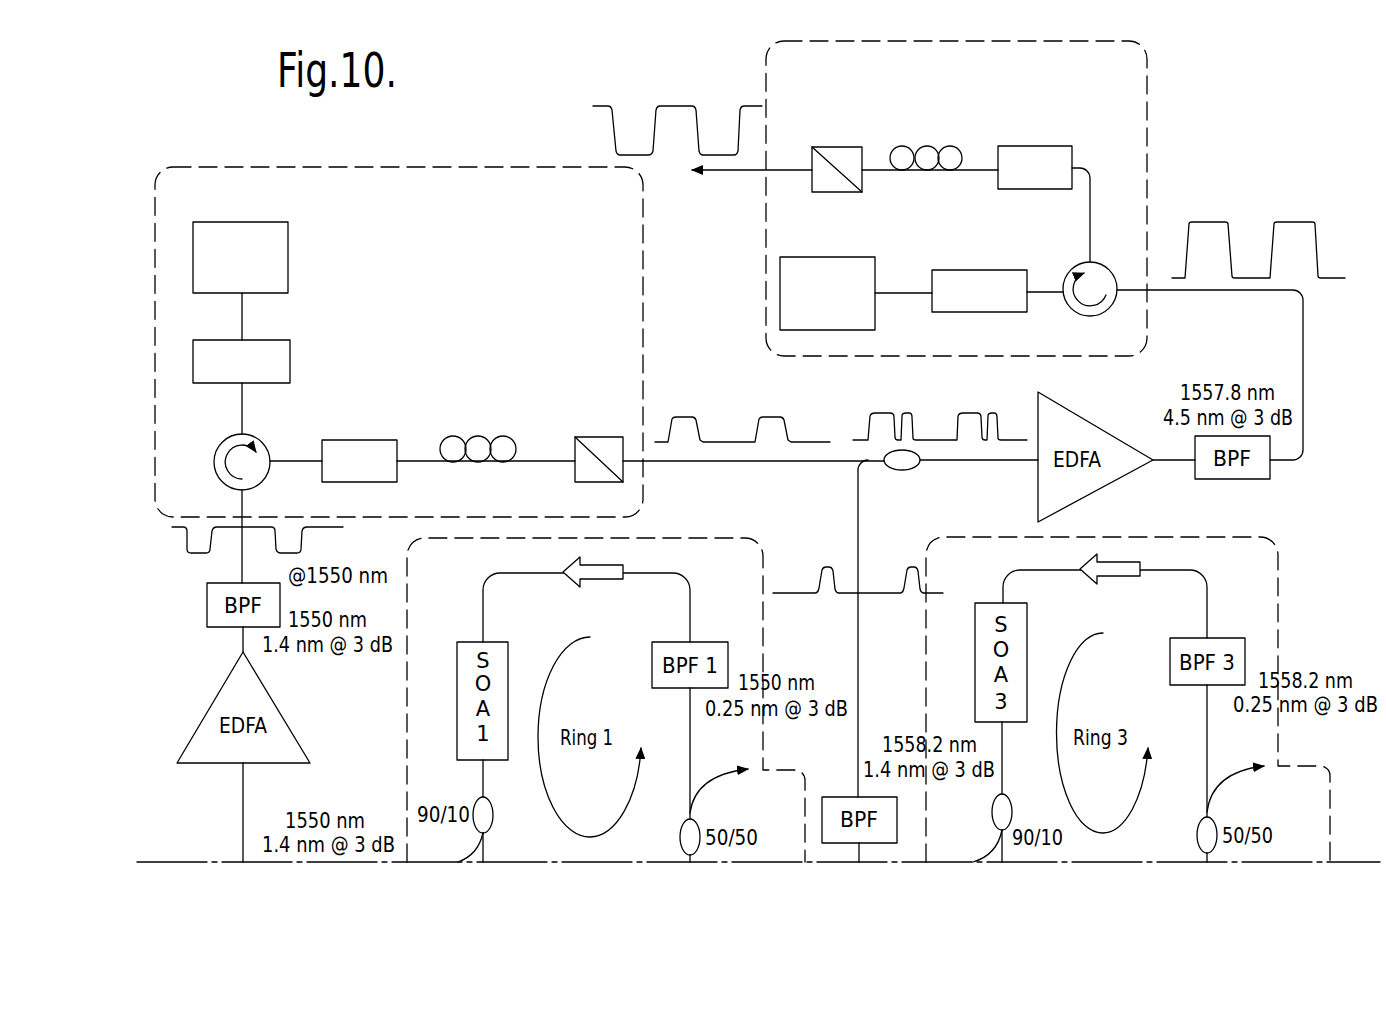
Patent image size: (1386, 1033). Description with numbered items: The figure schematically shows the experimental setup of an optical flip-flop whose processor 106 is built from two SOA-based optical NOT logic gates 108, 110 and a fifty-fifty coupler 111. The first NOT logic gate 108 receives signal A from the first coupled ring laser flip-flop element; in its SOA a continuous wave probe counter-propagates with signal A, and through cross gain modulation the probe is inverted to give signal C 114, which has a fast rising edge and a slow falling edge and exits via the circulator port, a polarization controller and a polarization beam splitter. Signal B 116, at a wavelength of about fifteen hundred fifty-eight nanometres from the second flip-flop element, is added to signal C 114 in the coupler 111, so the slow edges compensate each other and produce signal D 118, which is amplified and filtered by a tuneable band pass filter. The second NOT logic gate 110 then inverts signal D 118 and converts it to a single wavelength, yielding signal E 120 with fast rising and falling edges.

The processor 106 is at (503, 126).
The first optical NOT logic gate 108 is at (447, 290).
The second optical NOT logic gate 110 is at (1052, 76).
The 50-50 coupler 111 is at (920, 462).
The signal C 114 is at (662, 376).
The signal B 116 is at (887, 540).
The signal D 118 is at (1299, 144).
The signal E 120 is at (682, 62).